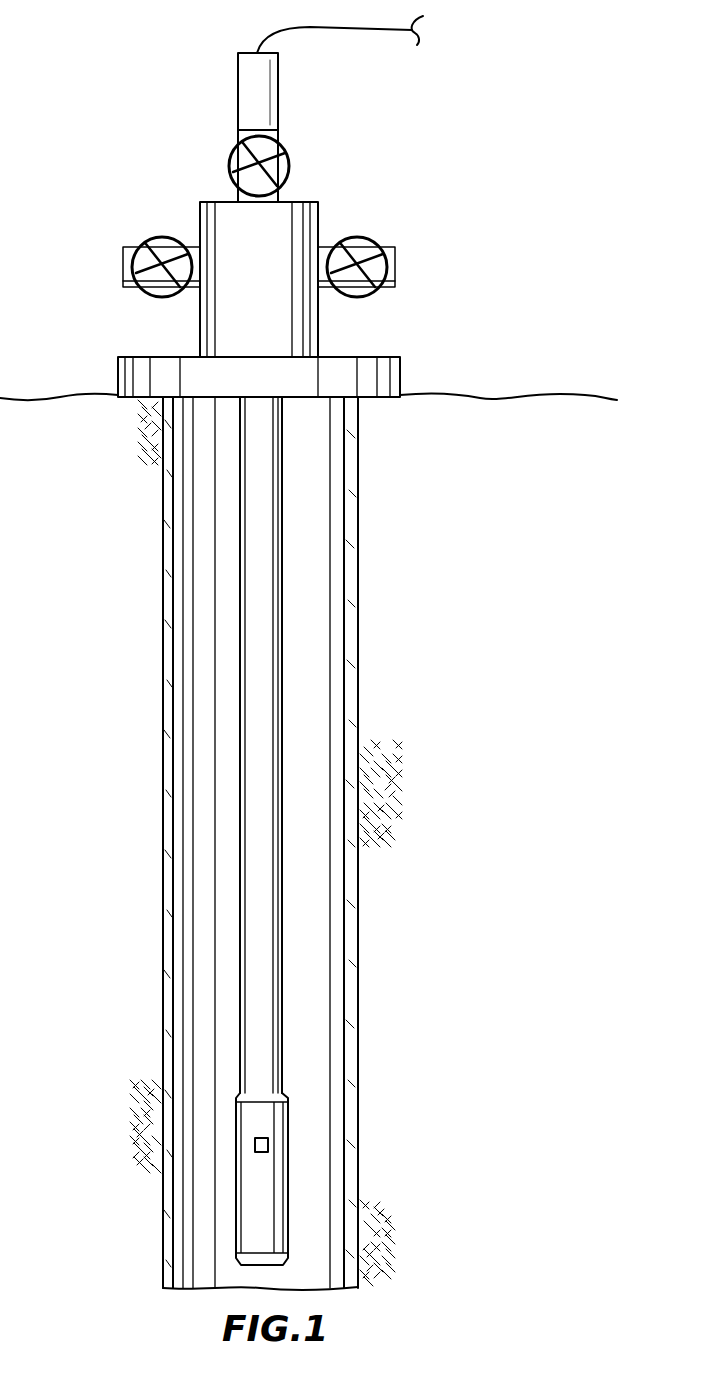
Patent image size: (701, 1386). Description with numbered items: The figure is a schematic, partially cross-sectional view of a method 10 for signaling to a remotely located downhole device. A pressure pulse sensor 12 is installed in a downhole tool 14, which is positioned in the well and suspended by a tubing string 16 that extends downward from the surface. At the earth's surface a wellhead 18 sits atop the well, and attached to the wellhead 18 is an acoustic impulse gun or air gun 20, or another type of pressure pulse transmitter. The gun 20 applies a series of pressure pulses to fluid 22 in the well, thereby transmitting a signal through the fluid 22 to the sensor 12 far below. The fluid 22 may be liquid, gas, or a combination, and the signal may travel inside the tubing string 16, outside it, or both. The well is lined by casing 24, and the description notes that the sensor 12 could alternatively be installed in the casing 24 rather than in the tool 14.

The method 10 is at (513, 133).
The pressure pulse sensor 12 is at (268, 1146).
The downhole tool 14 is at (232, 1135).
The tubing string 16 is at (282, 665).
The wellhead 18 is at (318, 212).
The acoustic impulse gun 20 is at (238, 77).
The fluid 22 is at (203, 665).
The casing 24 is at (355, 890).